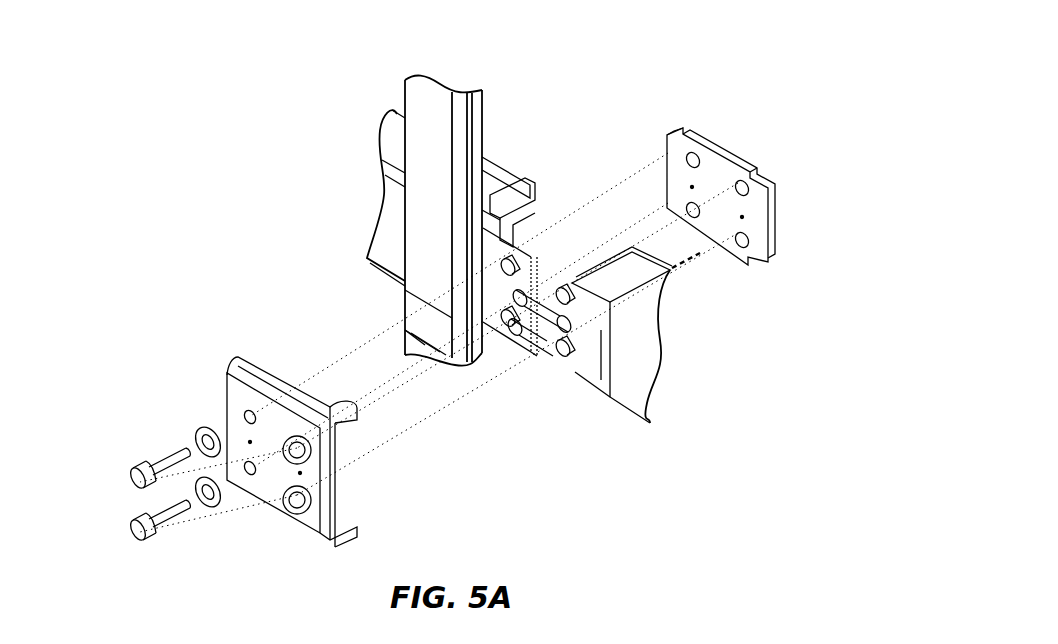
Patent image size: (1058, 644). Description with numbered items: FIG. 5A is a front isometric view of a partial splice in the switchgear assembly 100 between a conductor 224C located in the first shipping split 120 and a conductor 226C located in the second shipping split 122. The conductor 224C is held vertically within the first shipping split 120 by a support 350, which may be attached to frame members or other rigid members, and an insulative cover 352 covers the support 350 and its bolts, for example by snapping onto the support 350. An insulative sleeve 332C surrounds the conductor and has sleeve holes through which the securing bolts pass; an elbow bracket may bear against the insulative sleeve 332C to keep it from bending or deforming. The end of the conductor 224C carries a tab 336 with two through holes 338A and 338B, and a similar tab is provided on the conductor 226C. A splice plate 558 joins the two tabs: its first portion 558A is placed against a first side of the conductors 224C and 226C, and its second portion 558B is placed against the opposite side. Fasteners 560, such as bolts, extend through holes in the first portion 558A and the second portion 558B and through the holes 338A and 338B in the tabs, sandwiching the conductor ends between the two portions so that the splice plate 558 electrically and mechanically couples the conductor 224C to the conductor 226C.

The modular structure 100 is at (742, 56).
The first shipping split 120 is at (362, 84).
The second shipping split 122 is at (800, 322).
The conductor 224C is at (533, 197).
The conductor 226C is at (601, 380).
The insulative sleeve 332C is at (493, 177).
The tab 336 is at (518, 266).
The through hole 338A is at (561, 352).
The through hole 338B is at (563, 292).
The support 350 is at (407, 345).
The insulative cover 352 is at (414, 300).
The splice plate 558 is at (300, 536).
The first portion 558A is at (238, 358).
The second portion 558B is at (776, 208).
The fasteners 560 is at (135, 483).